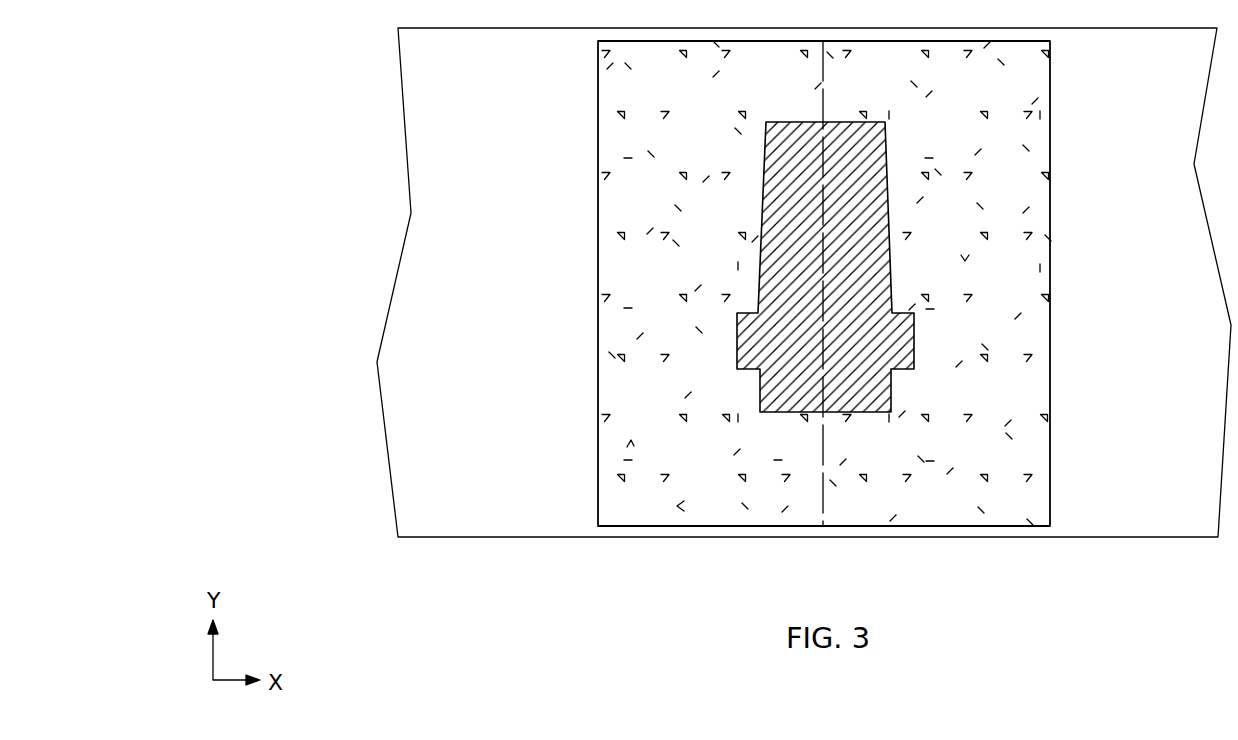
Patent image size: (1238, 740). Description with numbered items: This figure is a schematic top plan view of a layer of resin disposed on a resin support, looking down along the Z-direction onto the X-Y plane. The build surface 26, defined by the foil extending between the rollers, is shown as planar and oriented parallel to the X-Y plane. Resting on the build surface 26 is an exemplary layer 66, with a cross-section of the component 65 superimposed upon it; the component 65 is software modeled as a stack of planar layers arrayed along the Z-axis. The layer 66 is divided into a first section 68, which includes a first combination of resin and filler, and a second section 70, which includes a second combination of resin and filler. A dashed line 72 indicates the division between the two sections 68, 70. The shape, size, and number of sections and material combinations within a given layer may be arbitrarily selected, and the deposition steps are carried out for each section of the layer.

The build surface 26 is at (1203, 518).
The component 65 is at (893, 254).
The layer 66 is at (1075, 128).
The first section 68 is at (734, 125).
The second section 70 is at (930, 125).
The dashed line 72 is at (822, 111).